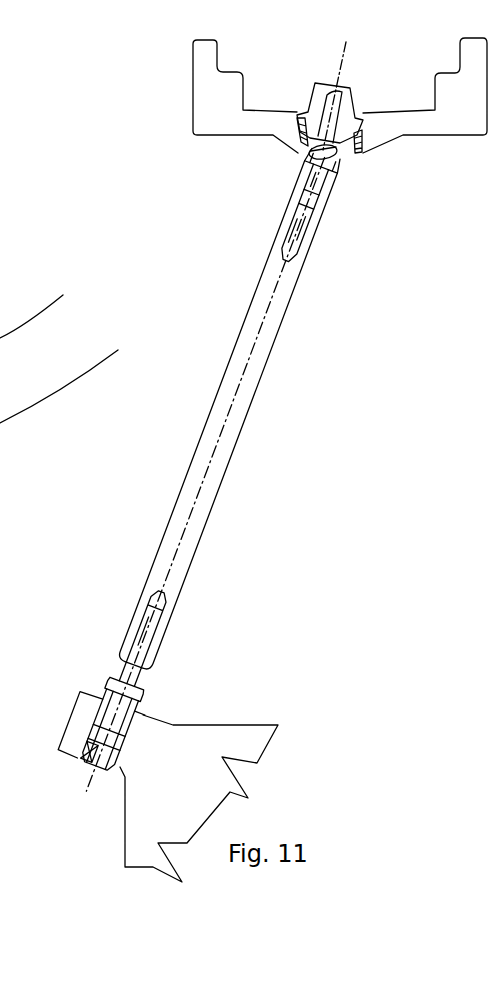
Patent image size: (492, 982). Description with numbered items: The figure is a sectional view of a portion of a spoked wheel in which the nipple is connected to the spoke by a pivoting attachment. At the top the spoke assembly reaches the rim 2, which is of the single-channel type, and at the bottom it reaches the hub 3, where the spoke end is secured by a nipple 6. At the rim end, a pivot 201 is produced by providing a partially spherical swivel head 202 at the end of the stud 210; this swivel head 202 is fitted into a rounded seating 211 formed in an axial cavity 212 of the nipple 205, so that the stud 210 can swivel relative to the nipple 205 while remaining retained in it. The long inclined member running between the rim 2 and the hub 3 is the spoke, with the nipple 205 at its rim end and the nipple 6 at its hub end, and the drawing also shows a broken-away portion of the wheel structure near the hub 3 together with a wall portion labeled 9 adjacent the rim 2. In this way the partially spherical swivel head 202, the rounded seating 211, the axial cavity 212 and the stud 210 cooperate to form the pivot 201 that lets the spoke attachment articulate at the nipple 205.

The rim 2 is at (213, 120).
The hub 3 is at (202, 743).
The nipple 6 is at (102, 672).
The housing wall 9 is at (31, 374).
The pivot 201 is at (339, 177).
The partially spherical swivel head 202 is at (308, 163).
The nipple 205 is at (306, 101).
The stud 210 is at (298, 235).
The rounded seating 211 is at (363, 162).
The axial cavity 212 is at (327, 125).